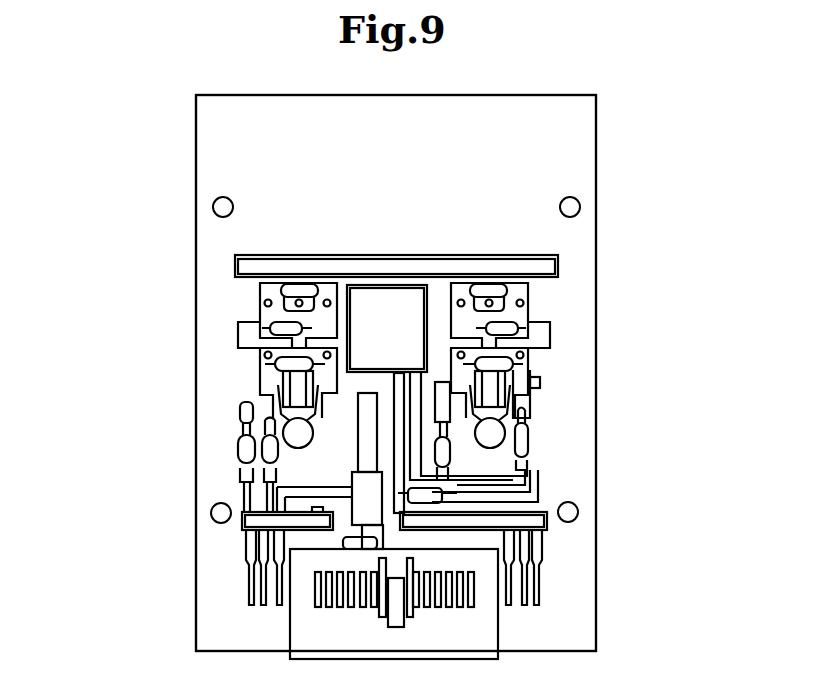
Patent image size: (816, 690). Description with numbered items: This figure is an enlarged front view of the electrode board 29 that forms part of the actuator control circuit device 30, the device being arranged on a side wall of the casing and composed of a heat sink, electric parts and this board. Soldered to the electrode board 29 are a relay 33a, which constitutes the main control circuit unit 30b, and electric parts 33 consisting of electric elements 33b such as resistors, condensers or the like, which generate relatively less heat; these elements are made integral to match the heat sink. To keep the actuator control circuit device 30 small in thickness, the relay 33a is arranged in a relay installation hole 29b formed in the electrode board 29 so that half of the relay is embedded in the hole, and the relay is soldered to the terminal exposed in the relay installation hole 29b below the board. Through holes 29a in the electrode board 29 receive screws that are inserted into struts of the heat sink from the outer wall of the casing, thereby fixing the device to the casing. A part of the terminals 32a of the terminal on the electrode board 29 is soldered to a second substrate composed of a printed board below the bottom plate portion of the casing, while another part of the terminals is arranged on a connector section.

The electrode board 29 is at (611, 157).
The through holes 29a is at (212, 207).
The relay installation hole 29b is at (426, 305).
The actuator control circuit device 30 is at (545, 371).
The main control circuit unit 30b is at (542, 405).
The terminals 32a is at (282, 605).
The electric parts 33 is at (242, 438).
The relay 33a is at (370, 300).
The electric elements 33b is at (248, 460).